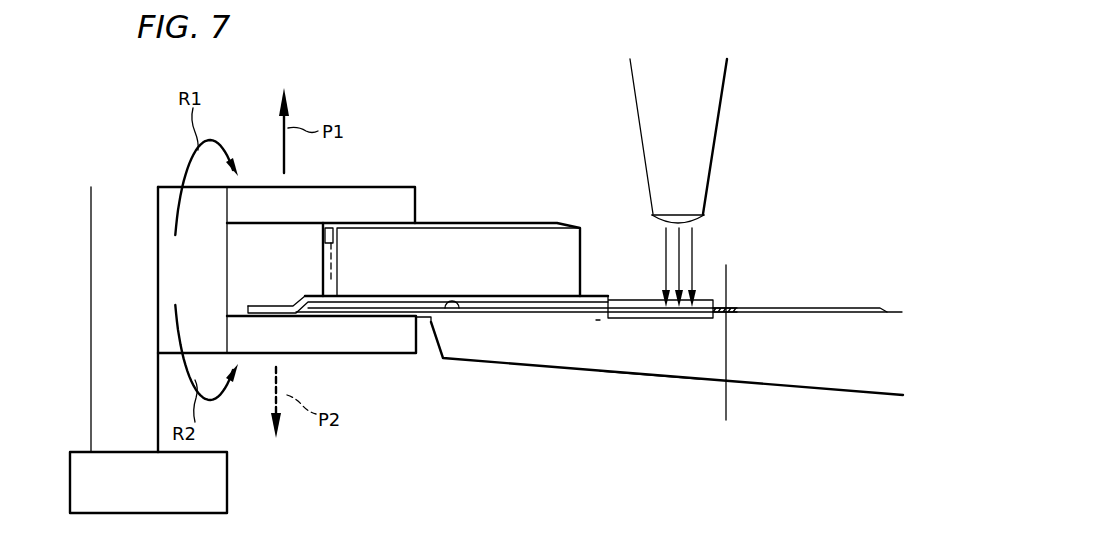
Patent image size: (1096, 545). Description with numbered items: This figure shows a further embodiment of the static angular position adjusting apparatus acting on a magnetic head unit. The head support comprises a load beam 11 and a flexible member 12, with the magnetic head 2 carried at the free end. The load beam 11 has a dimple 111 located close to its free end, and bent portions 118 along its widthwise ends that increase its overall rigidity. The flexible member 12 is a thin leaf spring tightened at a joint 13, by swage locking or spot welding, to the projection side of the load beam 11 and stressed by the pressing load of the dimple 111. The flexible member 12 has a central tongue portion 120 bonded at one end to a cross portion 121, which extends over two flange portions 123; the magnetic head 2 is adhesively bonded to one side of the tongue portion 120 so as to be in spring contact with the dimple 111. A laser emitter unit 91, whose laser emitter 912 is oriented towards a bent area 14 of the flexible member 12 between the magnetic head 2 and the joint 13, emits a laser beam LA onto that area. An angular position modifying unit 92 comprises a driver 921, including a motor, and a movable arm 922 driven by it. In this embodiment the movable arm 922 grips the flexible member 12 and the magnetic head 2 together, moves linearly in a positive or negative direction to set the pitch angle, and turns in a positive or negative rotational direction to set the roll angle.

The magnetic head 2 is at (552, 232).
The load beam 11 is at (670, 386).
The flexible member 12 is at (595, 275).
The joint 13 is at (735, 308).
The bent area 14 is at (628, 299).
The laser emitter unit 91 is at (620, 110).
The angular position modifying unit 92 is at (240, 480).
The dimple 111 is at (452, 302).
The bent portions 118 is at (807, 387).
The tongue portion 120 is at (517, 300).
The cross portion 121 is at (272, 306).
The flange portion 123 is at (373, 315).
The laser emitter 912 is at (711, 119).
The driver 921 is at (118, 198).
The movable arm 922 is at (397, 197).
The laser beam LA is at (687, 243).